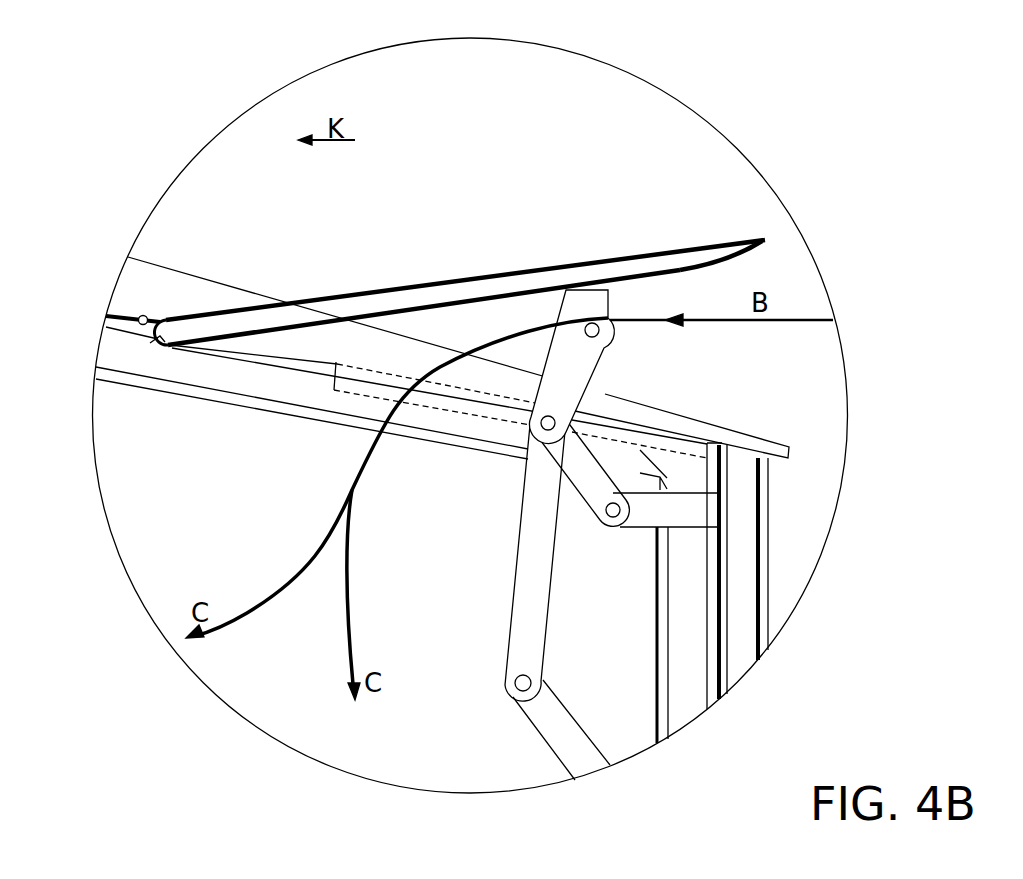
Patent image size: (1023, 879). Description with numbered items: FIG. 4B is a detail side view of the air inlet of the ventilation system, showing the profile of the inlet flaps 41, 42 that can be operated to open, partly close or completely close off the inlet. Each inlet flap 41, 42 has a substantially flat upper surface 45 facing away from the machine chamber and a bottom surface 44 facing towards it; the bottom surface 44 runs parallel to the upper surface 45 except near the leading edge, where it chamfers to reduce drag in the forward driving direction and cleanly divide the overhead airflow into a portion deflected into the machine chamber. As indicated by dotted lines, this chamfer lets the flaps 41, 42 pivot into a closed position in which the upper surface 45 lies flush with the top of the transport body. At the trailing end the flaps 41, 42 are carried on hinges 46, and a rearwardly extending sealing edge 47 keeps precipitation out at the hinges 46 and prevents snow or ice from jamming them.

The inlet flap 41 is at (459, 255).
The inlet flap 42 is at (438, 294).
The bottom surface 44 is at (716, 257).
The upper surface 45 is at (598, 258).
The hinges 46 is at (164, 327).
The sealing edge 47 is at (162, 347).